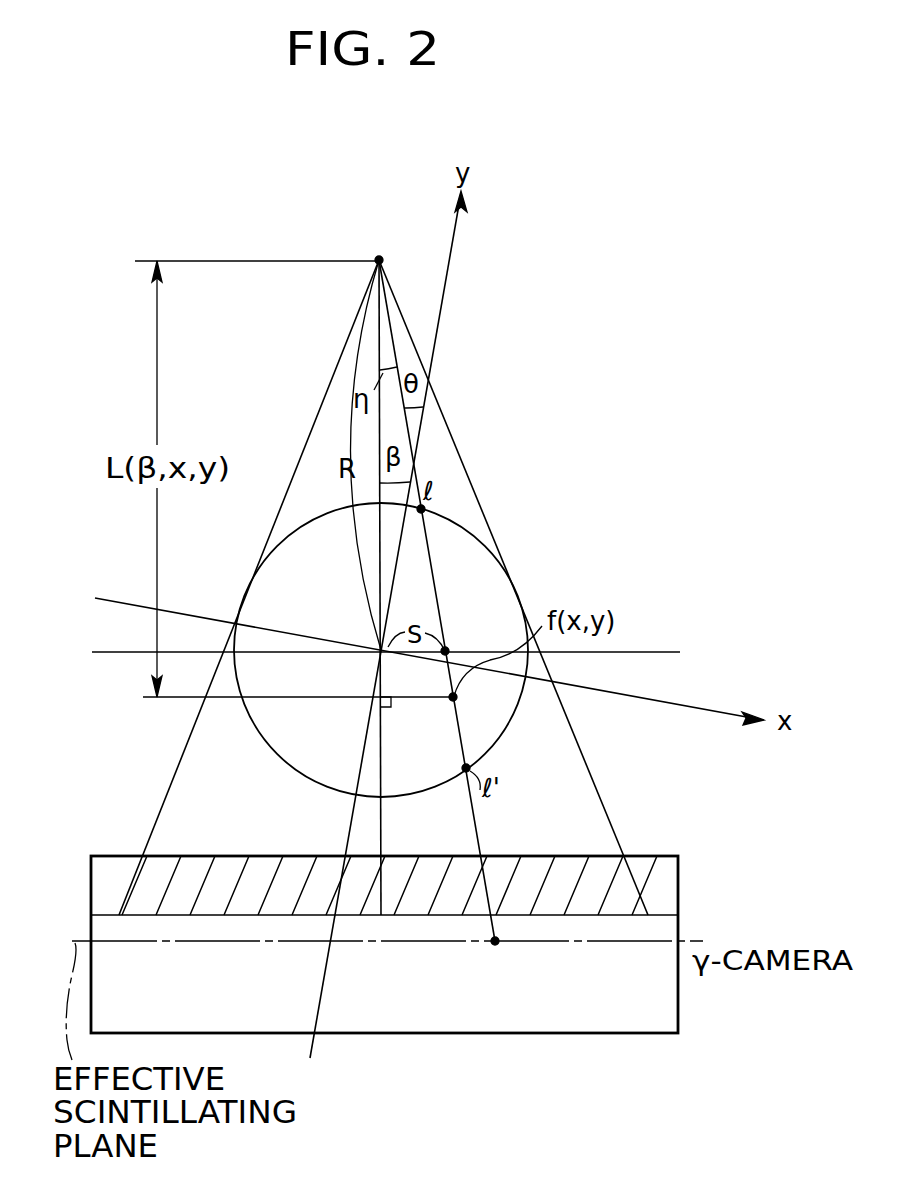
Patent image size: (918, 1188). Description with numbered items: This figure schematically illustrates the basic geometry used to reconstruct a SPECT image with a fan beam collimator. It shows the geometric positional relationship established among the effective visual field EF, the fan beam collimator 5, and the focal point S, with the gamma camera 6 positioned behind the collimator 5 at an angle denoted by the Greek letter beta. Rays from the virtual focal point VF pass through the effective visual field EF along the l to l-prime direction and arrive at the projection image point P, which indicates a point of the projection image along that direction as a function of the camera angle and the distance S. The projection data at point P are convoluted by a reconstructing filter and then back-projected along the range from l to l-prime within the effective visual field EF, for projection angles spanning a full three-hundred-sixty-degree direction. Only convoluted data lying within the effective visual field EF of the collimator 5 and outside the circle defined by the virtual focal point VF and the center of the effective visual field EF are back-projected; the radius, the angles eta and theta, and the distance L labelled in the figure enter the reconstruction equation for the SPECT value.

The fan beam collimator 5 is at (653, 863).
The gamma camera 6 is at (672, 975).
The virtual focal point VF is at (378, 258).
The effective visual field EF is at (481, 546).
The projection image point P(β, S) P is at (495, 941).